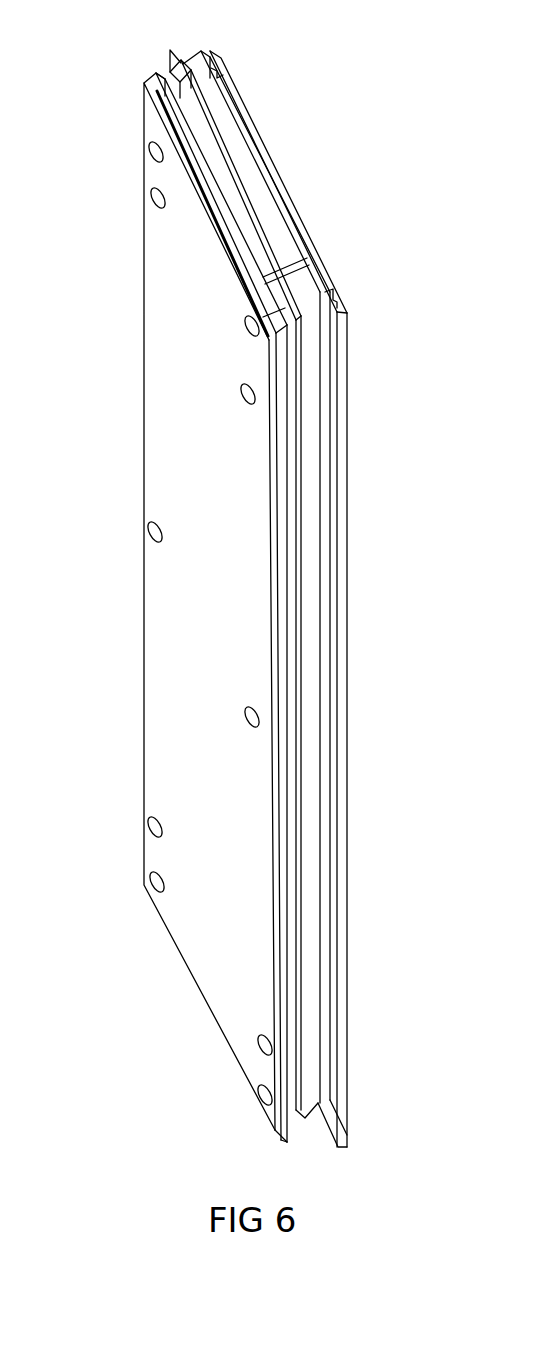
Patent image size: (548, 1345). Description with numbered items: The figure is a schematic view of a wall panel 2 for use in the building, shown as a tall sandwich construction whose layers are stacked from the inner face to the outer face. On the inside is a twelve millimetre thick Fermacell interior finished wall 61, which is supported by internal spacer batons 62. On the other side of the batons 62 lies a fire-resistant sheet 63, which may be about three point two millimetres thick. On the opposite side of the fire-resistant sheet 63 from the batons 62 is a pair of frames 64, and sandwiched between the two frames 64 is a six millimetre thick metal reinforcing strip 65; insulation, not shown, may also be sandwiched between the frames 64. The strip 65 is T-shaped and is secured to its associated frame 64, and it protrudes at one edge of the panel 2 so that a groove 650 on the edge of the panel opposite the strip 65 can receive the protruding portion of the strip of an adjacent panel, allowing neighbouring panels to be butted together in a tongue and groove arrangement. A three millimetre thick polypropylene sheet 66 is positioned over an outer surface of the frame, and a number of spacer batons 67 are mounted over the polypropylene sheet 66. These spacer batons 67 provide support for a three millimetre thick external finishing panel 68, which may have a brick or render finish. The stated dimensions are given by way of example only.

The wall panel 2 is at (247, 585).
The interior finished wall 61 is at (236, 1010).
The spacer batons 62 is at (152, 80).
The fire-resistant sheet 63 is at (188, 164).
The frames 64 is at (288, 548).
The metal reinforcing strip 65 is at (167, 63).
The polypropylene sheet 66 is at (326, 368).
The groove 650 is at (300, 430).
The spacer batons 67 is at (337, 296).
The external finishing panel 68 is at (284, 185).